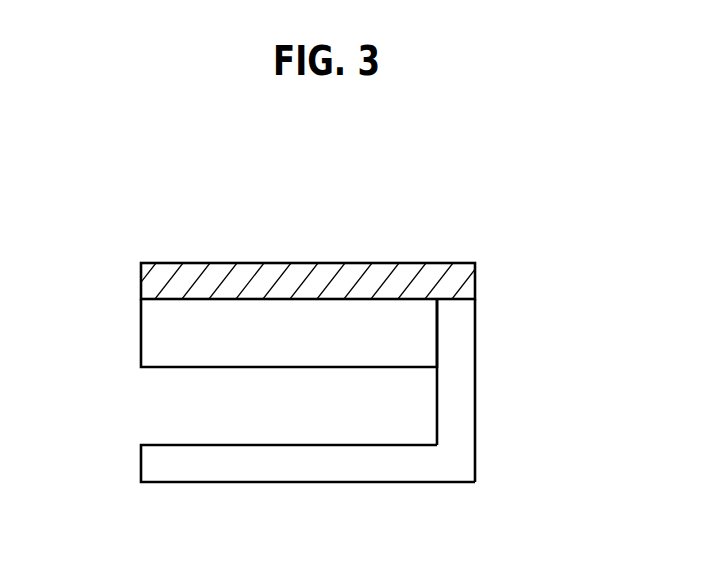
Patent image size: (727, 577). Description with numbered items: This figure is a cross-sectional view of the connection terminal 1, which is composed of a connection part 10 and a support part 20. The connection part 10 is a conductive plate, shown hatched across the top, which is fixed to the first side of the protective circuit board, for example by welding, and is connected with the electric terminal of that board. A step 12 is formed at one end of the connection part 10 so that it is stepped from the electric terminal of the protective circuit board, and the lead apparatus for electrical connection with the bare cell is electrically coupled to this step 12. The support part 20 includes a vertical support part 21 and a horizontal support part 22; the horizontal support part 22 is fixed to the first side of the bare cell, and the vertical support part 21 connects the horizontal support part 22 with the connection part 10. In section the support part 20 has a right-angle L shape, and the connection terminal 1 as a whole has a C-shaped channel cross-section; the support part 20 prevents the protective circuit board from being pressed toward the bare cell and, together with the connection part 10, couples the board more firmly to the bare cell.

The connection terminal 1 is at (178, 223).
The connection part 10 is at (277, 272).
The step 12 is at (150, 333).
The support part 20 is at (589, 425).
The vertical support part 21 is at (460, 427).
The horizontal support part 22 is at (373, 475).